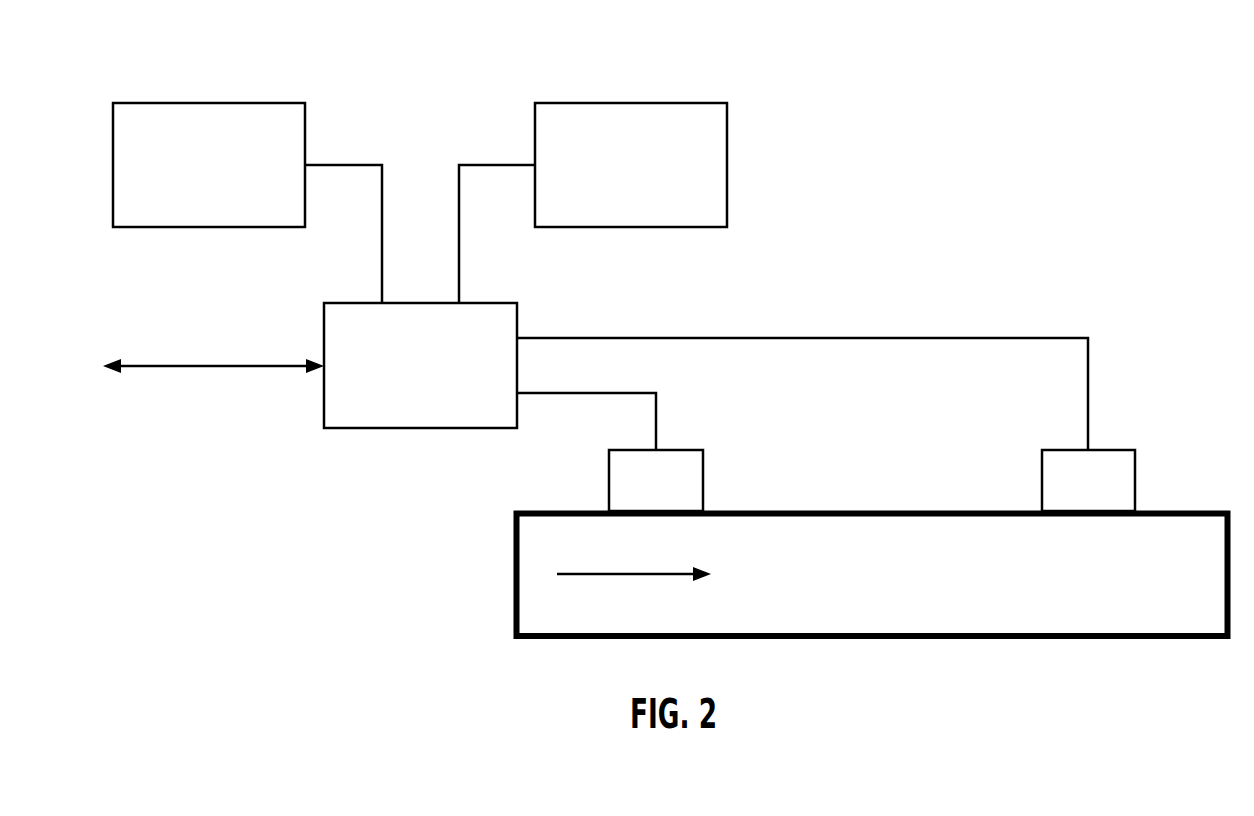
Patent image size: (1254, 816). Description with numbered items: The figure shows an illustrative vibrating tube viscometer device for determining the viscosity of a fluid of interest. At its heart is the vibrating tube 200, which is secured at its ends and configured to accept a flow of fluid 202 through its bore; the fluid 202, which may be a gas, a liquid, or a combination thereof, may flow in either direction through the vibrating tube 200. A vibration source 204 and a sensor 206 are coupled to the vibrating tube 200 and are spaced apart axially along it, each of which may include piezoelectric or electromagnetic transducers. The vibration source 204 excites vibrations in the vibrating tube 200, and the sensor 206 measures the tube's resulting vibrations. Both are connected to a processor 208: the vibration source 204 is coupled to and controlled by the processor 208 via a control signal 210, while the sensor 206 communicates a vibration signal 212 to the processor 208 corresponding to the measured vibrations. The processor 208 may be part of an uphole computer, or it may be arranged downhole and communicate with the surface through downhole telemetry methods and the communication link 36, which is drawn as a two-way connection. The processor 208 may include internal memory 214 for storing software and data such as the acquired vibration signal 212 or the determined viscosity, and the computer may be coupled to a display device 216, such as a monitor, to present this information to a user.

The vibrating tube 200 is at (515, 641).
The fluid 202 is at (630, 574).
The vibration source 204 is at (635, 450).
The sensor 206 is at (1112, 450).
The processor 208 is at (356, 303).
The control signal 210 is at (586, 393).
The vibration signal 212 is at (1018, 338).
The internal memory 214 is at (658, 103).
The display device 216 is at (185, 103).
The communication link 36 is at (170, 363).